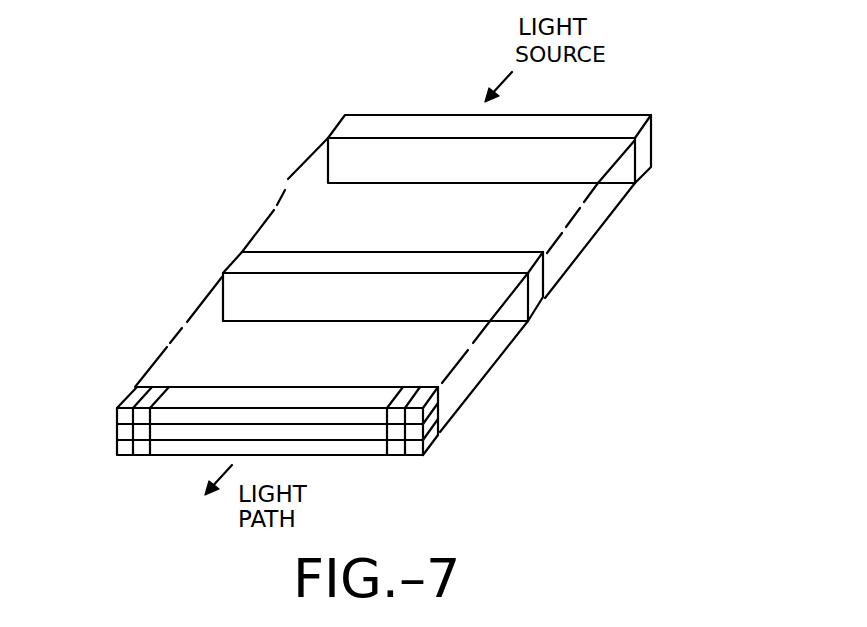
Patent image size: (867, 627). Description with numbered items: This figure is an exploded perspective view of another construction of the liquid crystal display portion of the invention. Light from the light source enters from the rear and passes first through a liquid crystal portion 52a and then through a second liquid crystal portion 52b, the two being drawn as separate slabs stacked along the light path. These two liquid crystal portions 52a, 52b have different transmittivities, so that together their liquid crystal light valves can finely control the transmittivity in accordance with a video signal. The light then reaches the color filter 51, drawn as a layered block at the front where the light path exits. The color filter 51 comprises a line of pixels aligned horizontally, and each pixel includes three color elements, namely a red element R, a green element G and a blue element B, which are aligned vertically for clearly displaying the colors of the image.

The liquid crystal portion 52a is at (643, 167).
The liquid crystal portion 52b is at (543, 297).
The color filter 51 is at (438, 432).
The red color element R is at (122, 415).
The green color element G is at (122, 432).
The blue color element B is at (127, 445).